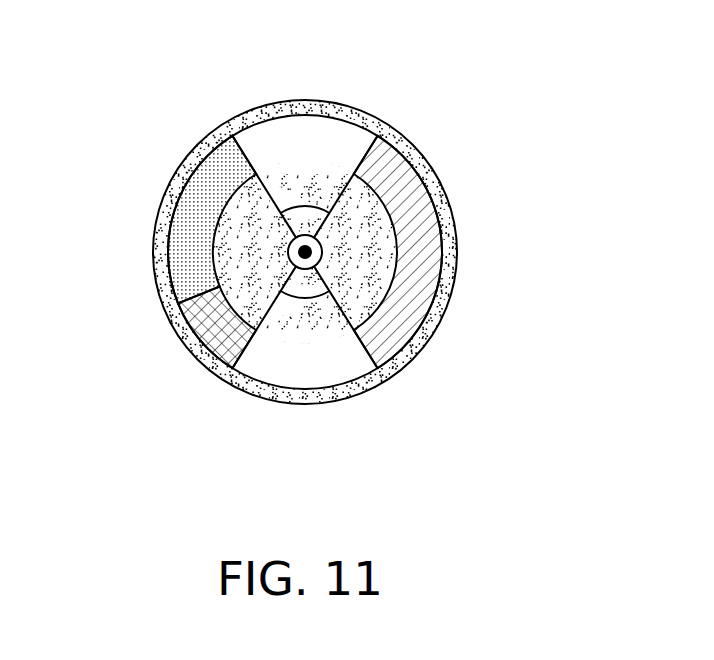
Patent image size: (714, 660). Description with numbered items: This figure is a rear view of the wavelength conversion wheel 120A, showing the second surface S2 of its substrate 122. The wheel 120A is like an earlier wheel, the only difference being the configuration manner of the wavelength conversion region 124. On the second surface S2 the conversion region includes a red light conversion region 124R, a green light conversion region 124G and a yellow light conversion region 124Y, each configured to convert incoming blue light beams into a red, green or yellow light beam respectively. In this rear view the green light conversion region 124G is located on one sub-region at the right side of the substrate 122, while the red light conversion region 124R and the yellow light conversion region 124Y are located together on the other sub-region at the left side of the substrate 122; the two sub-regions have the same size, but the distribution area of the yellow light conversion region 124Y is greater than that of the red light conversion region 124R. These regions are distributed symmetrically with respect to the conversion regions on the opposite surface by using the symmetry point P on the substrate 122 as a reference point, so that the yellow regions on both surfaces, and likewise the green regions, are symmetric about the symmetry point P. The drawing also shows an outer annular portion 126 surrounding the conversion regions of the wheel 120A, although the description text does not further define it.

The wavelength conversion wheel 120A is at (543, 492).
The outer ring / frame 126 is at (307, 138).
The substrate 122 is at (167, 266).
The wavelength conversion region 124 is at (316, 223).
The red light conversion region 124R is at (196, 348).
The green light conversion region 124G is at (425, 252).
The yellow light conversion region 124Y is at (195, 207).
The symmetry point P is at (303, 277).
The second surface S2 is at (362, 284).